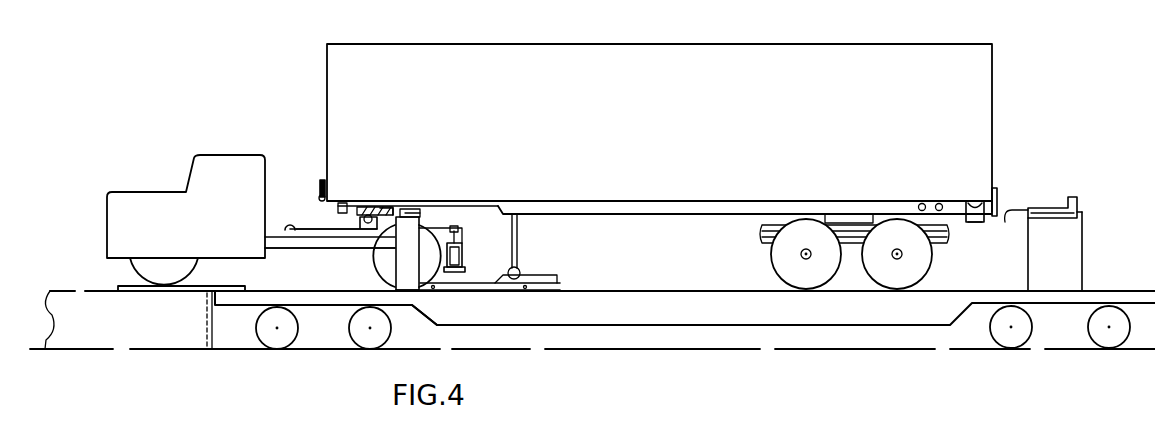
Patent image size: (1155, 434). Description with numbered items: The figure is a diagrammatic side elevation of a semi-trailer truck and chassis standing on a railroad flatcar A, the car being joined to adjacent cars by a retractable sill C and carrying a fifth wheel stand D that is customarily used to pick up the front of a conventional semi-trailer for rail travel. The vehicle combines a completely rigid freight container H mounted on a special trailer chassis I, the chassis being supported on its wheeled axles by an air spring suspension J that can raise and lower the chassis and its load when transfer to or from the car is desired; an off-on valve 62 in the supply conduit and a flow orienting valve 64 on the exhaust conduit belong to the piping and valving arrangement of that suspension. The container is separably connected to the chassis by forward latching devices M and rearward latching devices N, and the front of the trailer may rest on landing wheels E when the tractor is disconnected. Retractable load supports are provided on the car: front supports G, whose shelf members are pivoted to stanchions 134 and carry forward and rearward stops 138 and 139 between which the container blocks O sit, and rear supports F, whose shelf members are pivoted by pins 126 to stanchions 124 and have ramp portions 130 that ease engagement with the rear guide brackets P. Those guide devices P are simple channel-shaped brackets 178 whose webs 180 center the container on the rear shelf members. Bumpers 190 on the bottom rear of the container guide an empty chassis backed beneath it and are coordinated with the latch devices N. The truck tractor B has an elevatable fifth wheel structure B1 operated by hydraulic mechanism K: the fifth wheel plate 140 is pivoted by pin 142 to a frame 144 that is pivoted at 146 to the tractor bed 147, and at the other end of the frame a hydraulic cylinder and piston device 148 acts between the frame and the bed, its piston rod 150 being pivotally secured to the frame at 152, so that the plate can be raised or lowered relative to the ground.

The flatcar A is at (923, 310).
The truck tractor B is at (188, 183).
The fifth wheel structure B1 is at (393, 207).
The retractable sill C is at (196, 293).
The fifth wheel stand D is at (543, 283).
The landing wheels E is at (520, 252).
The rear retractable support F is at (1099, 194).
The front retractable support G is at (386, 256).
The container H is at (987, 110).
The trailer chassis I is at (723, 214).
The air spring suspension J is at (851, 247).
The hydraulic mechanism K is at (474, 224).
The forward latching device M is at (317, 177).
The rearward latching device N is at (1002, 186).
The block O is at (343, 203).
The rear guide bracket P is at (975, 191).
The off-on valve 62 is at (919, 204).
The flow orienting valve 64 is at (936, 204).
The stanchion 124 is at (1068, 258).
The pin 126 is at (1083, 213).
The ramp portion 130 is at (1007, 219).
The stanchion 134 is at (408, 277).
The forward stop 138 is at (405, 210).
The rearward stop 139 is at (428, 213).
The fifth wheel plate 140 is at (372, 207).
The pin 142 is at (358, 222).
The frame 144 is at (302, 228).
The pivot 146 is at (289, 226).
The tractor bed 147 is at (280, 249).
The hydraulic cylinder and piston device 148 is at (467, 260).
The piston rod 150 is at (462, 240).
The pivot 152 is at (456, 226).
The channel-shaped bracket 178 is at (980, 224).
The web 180 is at (966, 200).
The bumper 190 is at (1002, 203).